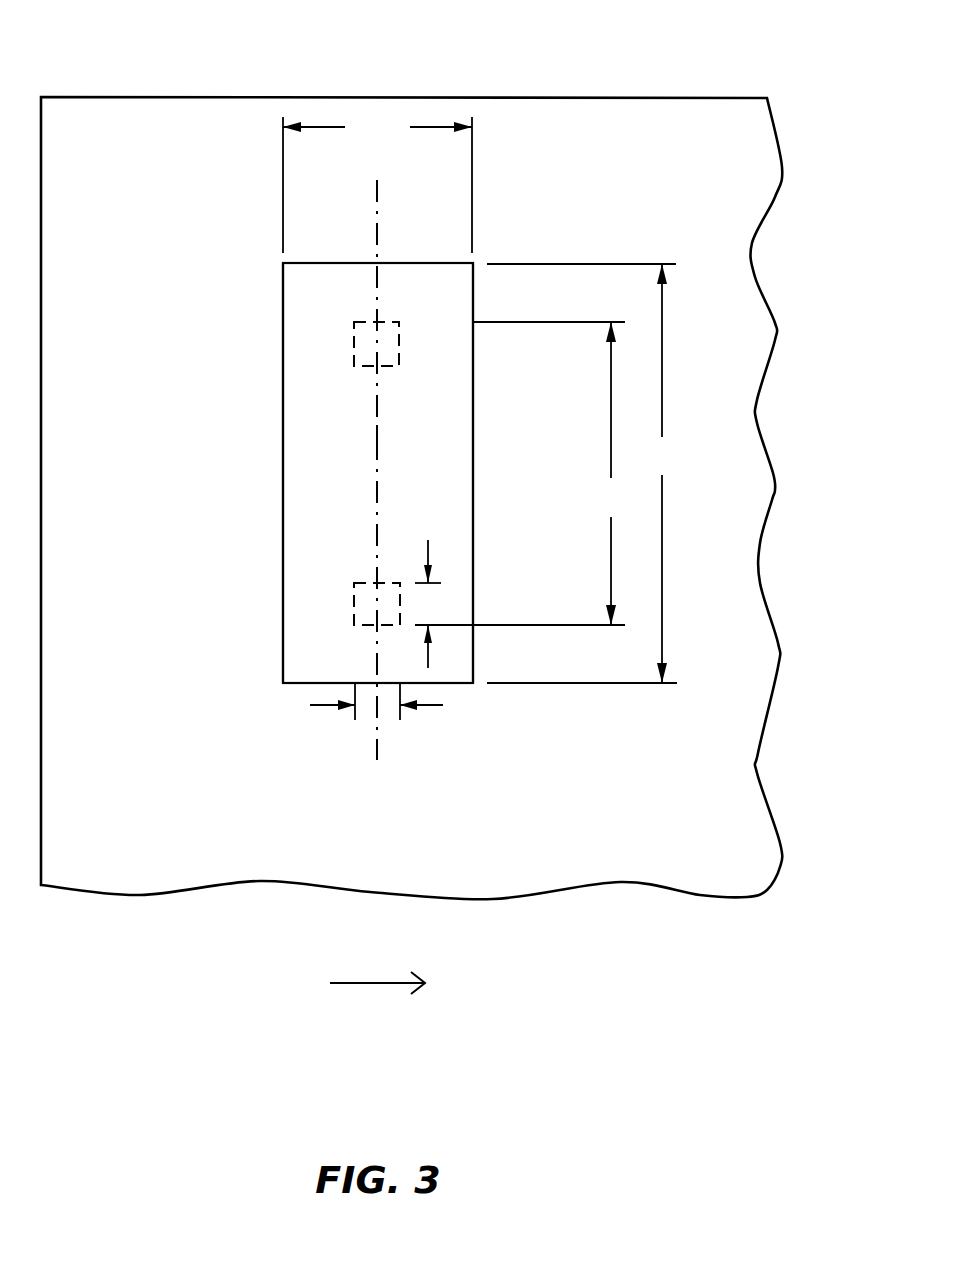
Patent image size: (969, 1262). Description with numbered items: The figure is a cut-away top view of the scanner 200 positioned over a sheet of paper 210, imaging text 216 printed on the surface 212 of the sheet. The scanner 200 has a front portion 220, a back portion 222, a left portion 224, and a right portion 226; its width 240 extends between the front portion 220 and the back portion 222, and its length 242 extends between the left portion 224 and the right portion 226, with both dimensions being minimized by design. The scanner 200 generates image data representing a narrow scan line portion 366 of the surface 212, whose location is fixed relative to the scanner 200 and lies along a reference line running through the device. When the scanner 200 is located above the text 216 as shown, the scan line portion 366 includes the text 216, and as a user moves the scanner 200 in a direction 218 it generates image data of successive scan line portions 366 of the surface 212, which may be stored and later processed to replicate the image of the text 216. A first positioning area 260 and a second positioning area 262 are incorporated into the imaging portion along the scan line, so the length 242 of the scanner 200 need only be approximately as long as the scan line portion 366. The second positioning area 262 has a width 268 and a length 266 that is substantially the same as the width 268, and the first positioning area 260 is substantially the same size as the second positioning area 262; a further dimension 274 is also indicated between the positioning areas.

The scanner 200 is at (238, 650).
The sheet of paper 210 is at (648, 56).
The surface 212 is at (164, 529).
The text 216 is at (332, 465).
The direction 218 is at (375, 984).
The front portion 220 is at (473, 375).
The back portion 222 is at (283, 390).
The left portion 224 is at (328, 262).
The right portion 226 is at (463, 684).
The width 240 is at (377, 181).
The length 242 is at (587, 473).
The first positioning area 260 is at (354, 326).
The second positioning area 262 is at (354, 594).
The length 266 is at (428, 541).
The width 268 is at (313, 705).
The distance between marks 274 is at (525, 473).
The scan line portion 366 is at (378, 437).